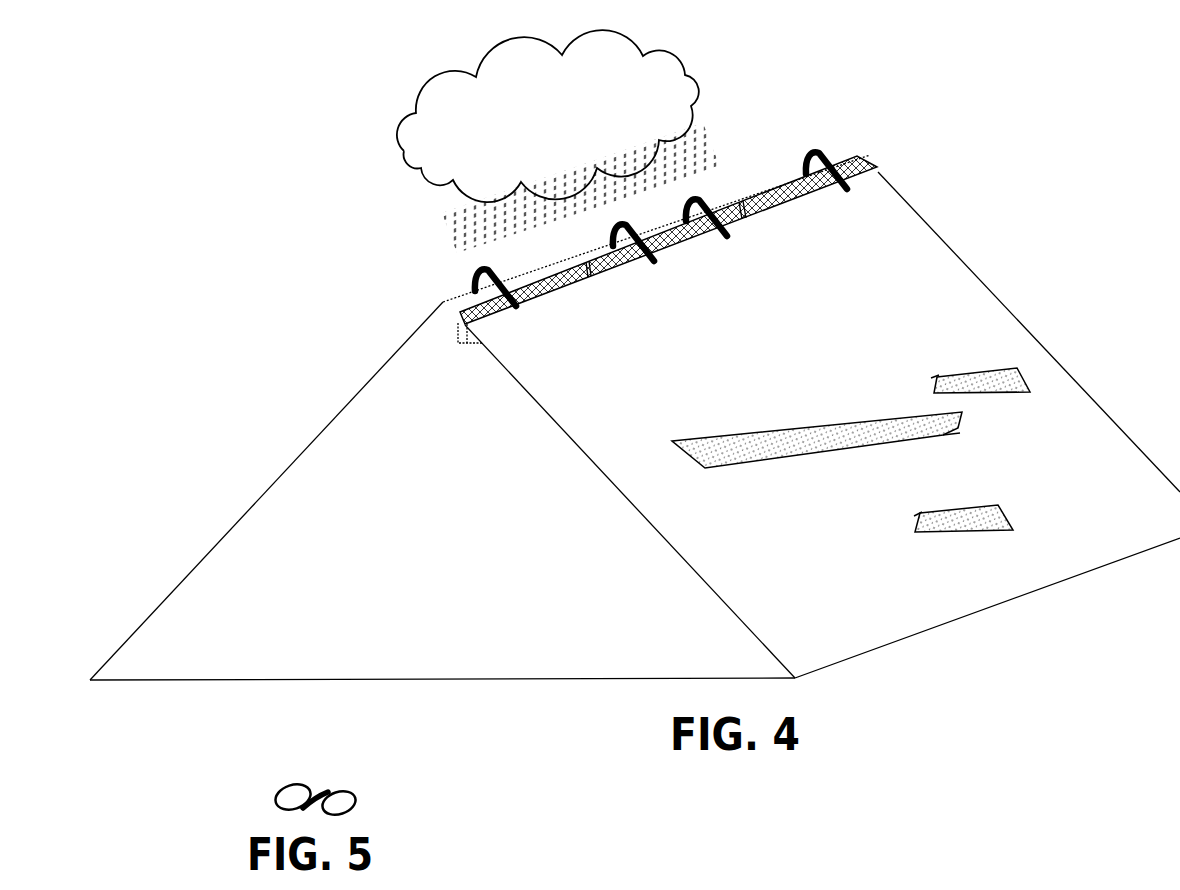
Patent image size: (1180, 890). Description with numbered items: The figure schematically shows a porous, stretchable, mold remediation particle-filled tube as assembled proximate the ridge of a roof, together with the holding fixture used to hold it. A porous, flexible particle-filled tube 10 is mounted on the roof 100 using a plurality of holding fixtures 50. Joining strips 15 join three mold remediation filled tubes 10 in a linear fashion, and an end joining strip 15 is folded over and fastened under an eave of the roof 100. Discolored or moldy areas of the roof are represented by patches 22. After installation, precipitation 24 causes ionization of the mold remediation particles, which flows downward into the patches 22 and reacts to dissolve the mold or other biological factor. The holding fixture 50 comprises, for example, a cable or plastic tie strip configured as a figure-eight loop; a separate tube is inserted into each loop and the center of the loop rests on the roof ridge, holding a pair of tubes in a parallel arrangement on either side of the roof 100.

In FIG. 4, the roof 100 is at (627, 503).
In FIG. 4, the precipitation 24 is at (455, 240).
In FIG. 4, the porous, flexible particle-filled tube 10 is at (546, 300).
In FIG. 4, the joining strip 15 is at (587, 280).
In FIG. 4, the holding fixture 50 is at (513, 310).
In FIG. 5, the holding fixture 50 is at (354, 805).
In FIG. 4, the patch 22 is at (1002, 397).